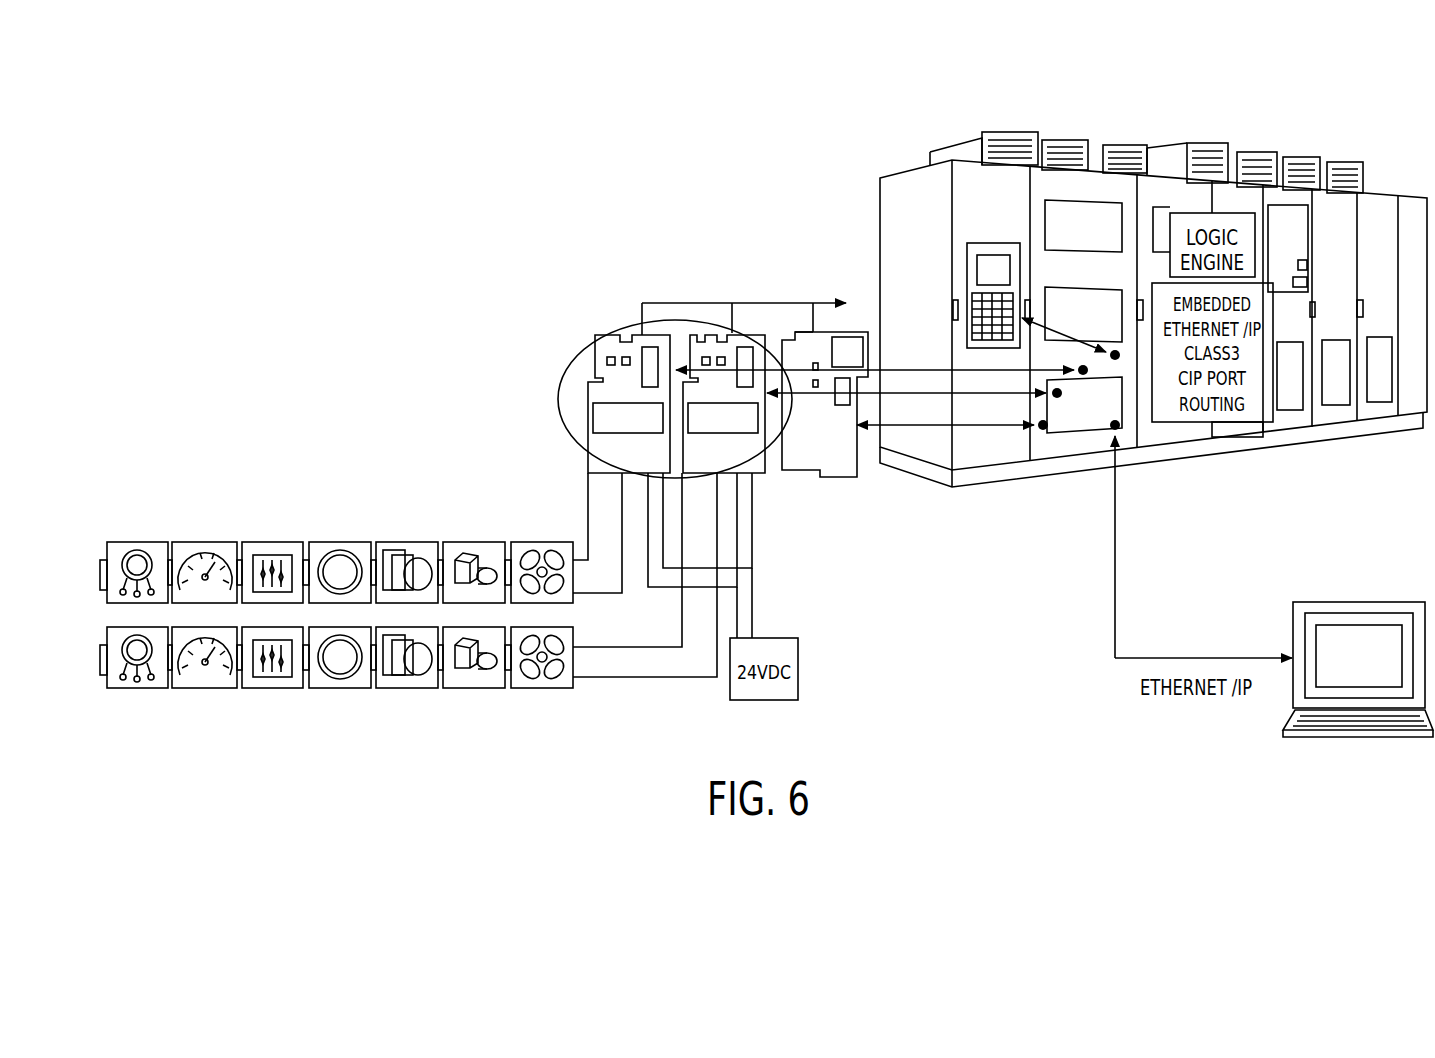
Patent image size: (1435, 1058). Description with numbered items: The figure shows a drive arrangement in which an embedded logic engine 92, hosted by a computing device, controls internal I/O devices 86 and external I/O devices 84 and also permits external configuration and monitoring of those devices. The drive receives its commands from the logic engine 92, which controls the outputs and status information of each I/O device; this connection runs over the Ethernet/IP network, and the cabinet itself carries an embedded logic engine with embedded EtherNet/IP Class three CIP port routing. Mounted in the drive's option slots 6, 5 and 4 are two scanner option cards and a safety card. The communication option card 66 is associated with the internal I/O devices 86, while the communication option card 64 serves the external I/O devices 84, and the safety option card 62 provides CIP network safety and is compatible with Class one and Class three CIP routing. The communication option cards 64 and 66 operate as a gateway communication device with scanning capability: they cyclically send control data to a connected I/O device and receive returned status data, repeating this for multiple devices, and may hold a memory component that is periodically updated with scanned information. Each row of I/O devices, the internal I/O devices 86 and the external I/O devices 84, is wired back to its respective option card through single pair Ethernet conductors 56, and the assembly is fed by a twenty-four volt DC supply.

The safety card slot 4 is at (803, 322).
The scanner option slot 5 is at (775, 319).
The scanner option slot 6 is at (660, 388).
The single pair Ethernet (SPE) conductors 56 is at (616, 531).
The safety option card 62 is at (790, 339).
The communication option card 64 is at (700, 339).
The communication option card 66 is at (597, 363).
The external I/O devices 84 is at (466, 730).
The internal I/O devices 86 is at (466, 531).
The logic engine 92 is at (1345, 602).